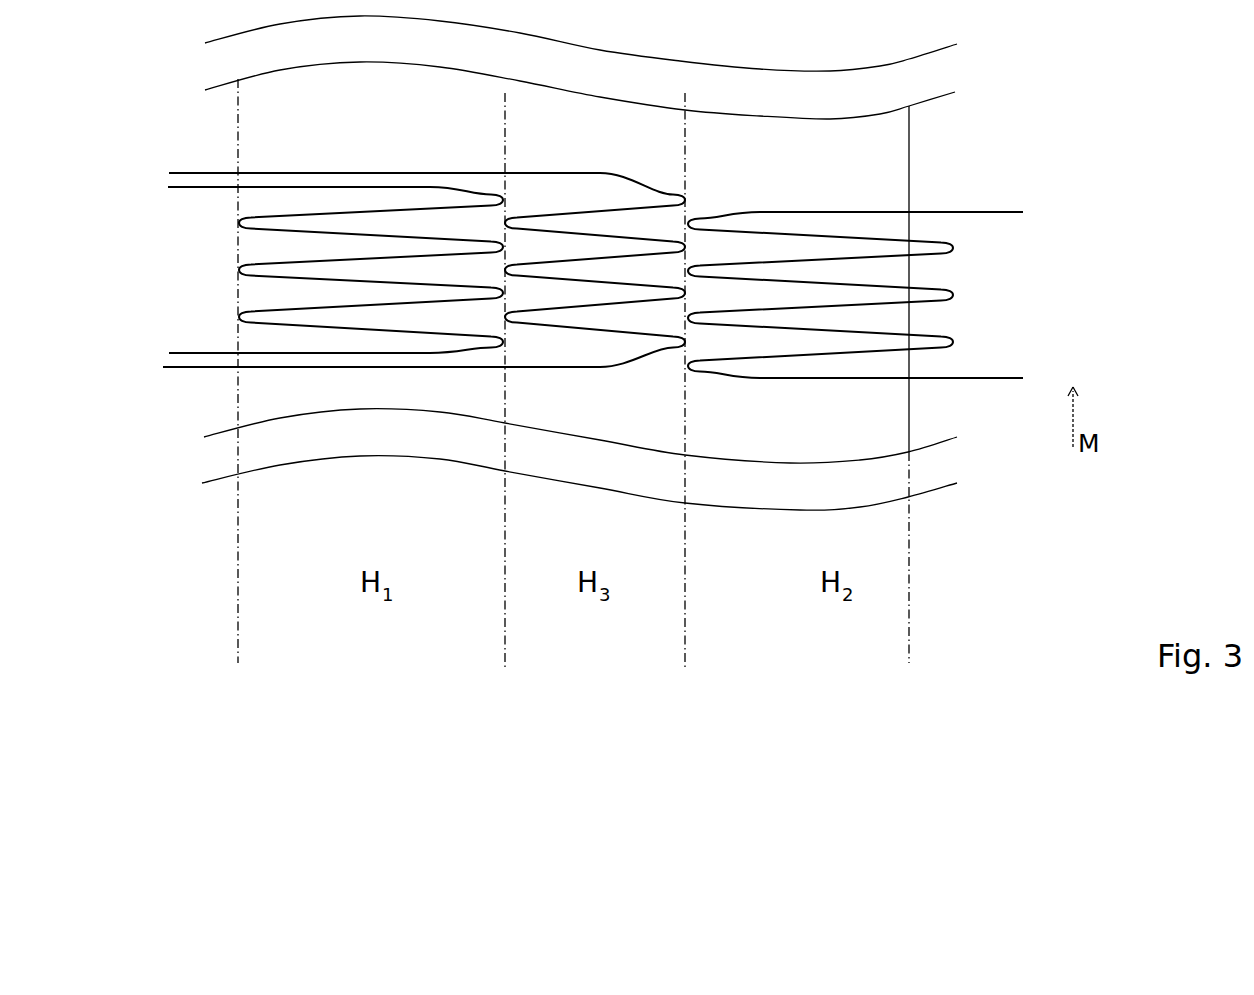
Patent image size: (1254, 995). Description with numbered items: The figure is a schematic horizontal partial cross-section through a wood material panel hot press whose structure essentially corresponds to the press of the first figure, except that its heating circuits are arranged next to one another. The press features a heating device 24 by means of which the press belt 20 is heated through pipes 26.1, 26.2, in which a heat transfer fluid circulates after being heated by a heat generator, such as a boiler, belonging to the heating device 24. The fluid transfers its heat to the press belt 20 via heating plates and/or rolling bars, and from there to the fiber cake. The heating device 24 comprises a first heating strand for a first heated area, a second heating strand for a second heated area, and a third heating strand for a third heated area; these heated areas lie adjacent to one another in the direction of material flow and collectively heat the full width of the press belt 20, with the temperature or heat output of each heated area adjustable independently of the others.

The press belt 20 is at (909, 180).
The heating device 24 is at (1140, 221).
The pipe 26.1 is at (208, 172).
The pipe 26.2 is at (209, 190).